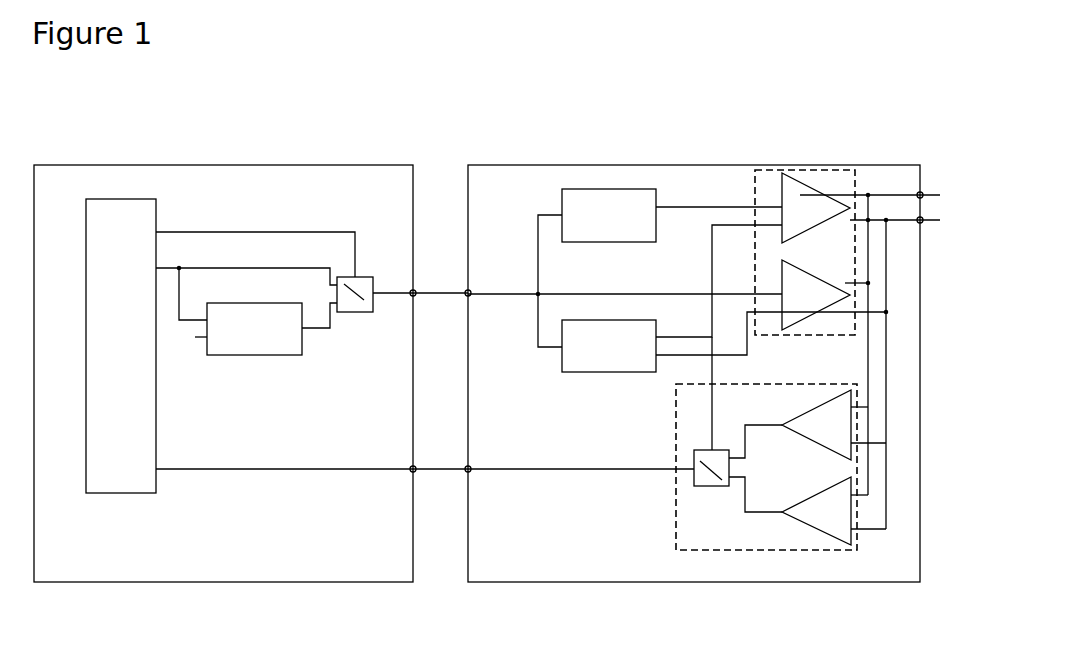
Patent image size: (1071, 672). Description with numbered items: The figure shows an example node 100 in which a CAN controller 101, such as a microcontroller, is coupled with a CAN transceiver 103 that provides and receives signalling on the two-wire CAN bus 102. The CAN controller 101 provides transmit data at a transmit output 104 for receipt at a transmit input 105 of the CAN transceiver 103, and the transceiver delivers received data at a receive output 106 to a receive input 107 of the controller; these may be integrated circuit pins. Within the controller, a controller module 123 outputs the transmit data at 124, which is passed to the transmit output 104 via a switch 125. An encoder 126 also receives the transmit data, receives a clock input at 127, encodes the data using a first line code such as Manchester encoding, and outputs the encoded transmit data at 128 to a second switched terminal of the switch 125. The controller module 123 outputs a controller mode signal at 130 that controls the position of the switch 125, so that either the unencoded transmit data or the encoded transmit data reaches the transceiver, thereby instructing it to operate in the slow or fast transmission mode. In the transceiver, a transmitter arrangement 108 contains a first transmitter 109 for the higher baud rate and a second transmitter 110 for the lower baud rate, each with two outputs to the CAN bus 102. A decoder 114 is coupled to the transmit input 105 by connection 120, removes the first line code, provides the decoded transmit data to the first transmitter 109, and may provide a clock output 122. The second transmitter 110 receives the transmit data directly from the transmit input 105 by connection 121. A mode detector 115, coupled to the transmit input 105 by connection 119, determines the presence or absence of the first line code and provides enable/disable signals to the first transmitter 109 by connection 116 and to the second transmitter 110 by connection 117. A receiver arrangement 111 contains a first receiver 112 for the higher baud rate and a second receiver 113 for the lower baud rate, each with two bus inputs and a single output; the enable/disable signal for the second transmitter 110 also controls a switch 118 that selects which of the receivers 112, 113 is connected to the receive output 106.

The node 100 is at (272, 75).
The CAN controller 101 is at (89, 165).
The CAN bus 102 is at (932, 182).
The CAN transceiver 103 is at (525, 165).
The transmit output 104 is at (414, 291).
The transmit input 105 is at (467, 296).
The receive output 106 is at (467, 466).
The receive input 107 is at (415, 472).
The transmitter arrangement 108 is at (755, 188).
The first transmitter 109 is at (861, 208).
The second transmitter 110 is at (826, 295).
The receiver arrangement 111 is at (675, 535).
The first receiver 112 is at (834, 511).
The second receiver 113 is at (834, 425).
The decoder 114 is at (609, 215).
The mode detector 115 is at (609, 346).
The connection 116 is at (690, 336).
The connection 117 is at (735, 362).
The switch 118 is at (712, 487).
The connection 119 is at (538, 320).
The connection 120 is at (538, 228).
The connection 121 is at (641, 294).
The clock output 122 is at (667, 225).
The controller module 123 is at (121, 346).
The transmit data output 124 is at (158, 268).
The switch 125 is at (373, 290).
The encoder 126 is at (254, 329).
The clock input 127 is at (195, 340).
The encoded transmit data output 128 is at (322, 331).
The controller mode signal output 130 is at (158, 232).